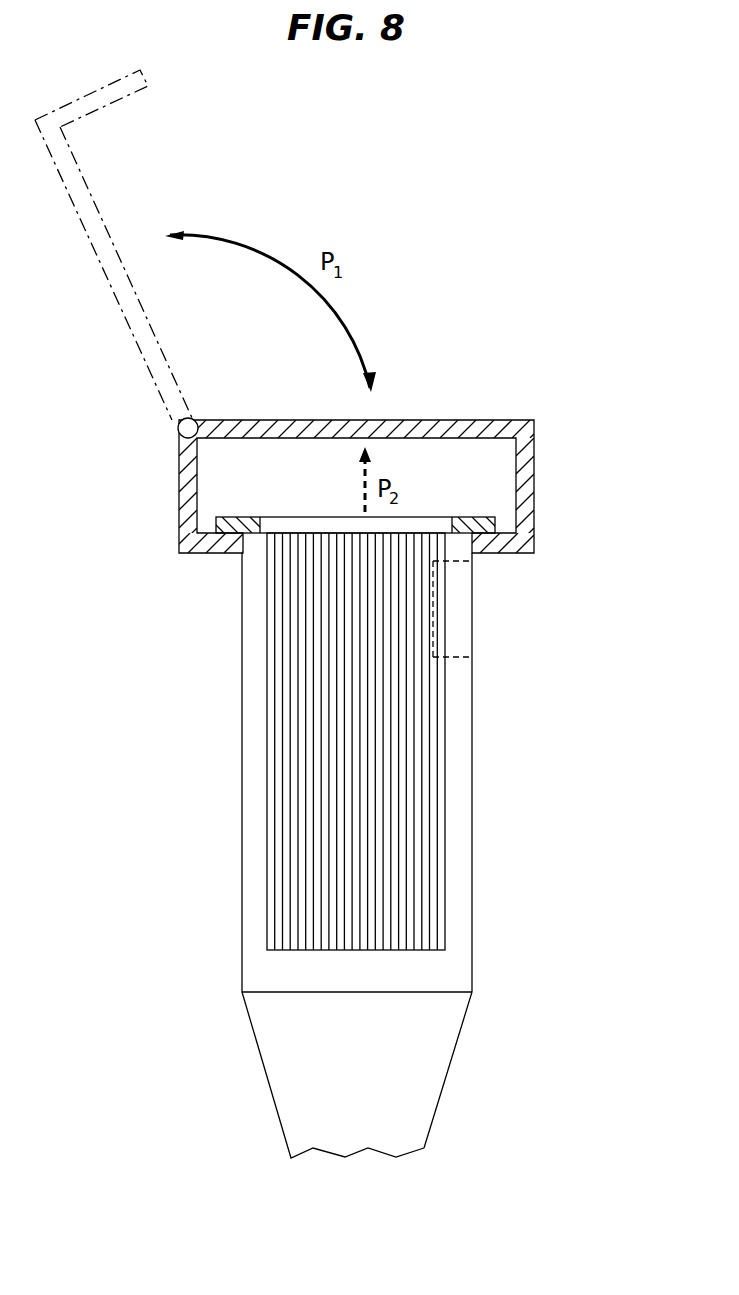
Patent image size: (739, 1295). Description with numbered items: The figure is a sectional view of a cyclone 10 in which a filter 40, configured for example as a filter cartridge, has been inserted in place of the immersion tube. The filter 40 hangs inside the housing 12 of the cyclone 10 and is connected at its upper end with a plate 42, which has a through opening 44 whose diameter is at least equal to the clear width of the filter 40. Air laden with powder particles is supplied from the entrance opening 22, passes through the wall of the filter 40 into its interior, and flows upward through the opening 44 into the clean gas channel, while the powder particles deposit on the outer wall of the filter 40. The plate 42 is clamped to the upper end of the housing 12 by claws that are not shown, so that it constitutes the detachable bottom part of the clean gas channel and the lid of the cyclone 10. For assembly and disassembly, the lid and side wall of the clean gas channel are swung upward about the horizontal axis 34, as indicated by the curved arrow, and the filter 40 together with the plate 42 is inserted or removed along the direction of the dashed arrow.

The cyclone 10 is at (256, 798).
The housing 12 is at (472, 782).
The entrance opening 22 is at (455, 613).
The horizontal axis 34 is at (178, 431).
The filter 40 is at (305, 678).
The plate 42 is at (478, 517).
The through opening 44 is at (312, 524).